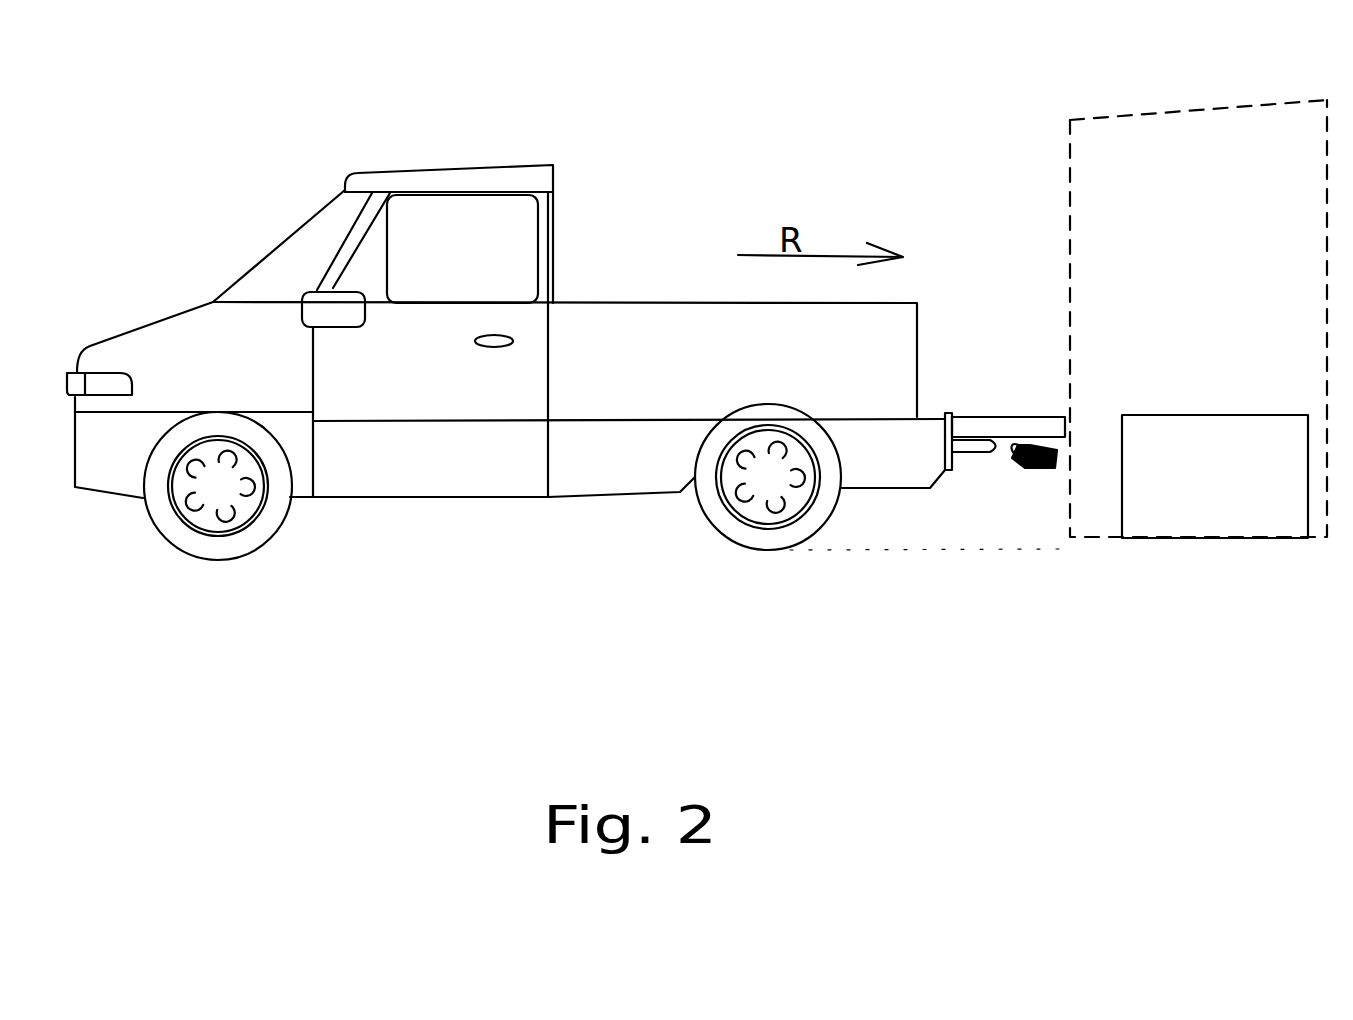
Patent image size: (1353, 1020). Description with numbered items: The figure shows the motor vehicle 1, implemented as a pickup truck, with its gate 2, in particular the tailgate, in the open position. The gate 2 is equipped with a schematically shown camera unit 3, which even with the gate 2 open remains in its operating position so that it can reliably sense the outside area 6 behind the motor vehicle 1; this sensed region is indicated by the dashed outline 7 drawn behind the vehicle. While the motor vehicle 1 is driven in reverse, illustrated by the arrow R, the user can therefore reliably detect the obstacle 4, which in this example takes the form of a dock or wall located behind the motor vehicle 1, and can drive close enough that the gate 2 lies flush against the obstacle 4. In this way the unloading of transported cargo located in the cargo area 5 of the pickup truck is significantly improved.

The motor vehicle 1 is at (450, 137).
The gate 2 is at (995, 417).
The camera unit 3 is at (1027, 470).
The obstacle 4 is at (1152, 413).
The cargo area 5 is at (940, 417).
The outside area 6 is at (1253, 202).
The dashed outline 7 is at (1167, 115).